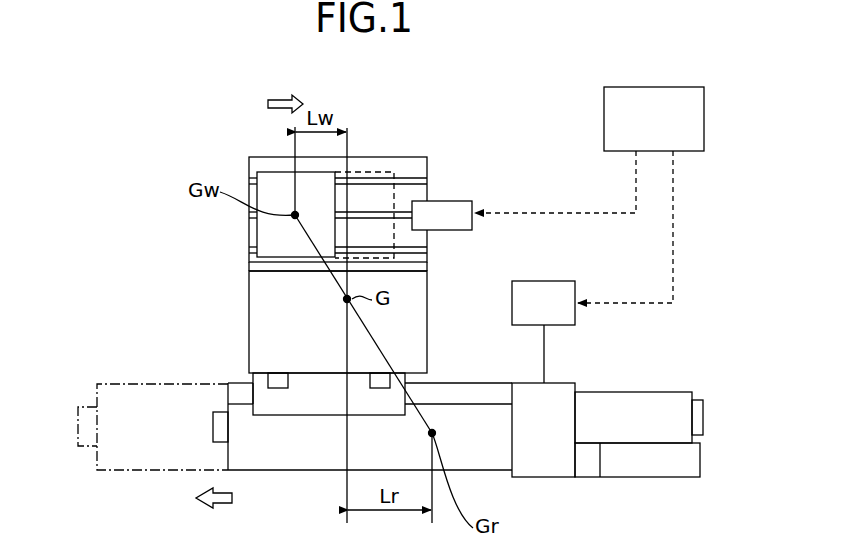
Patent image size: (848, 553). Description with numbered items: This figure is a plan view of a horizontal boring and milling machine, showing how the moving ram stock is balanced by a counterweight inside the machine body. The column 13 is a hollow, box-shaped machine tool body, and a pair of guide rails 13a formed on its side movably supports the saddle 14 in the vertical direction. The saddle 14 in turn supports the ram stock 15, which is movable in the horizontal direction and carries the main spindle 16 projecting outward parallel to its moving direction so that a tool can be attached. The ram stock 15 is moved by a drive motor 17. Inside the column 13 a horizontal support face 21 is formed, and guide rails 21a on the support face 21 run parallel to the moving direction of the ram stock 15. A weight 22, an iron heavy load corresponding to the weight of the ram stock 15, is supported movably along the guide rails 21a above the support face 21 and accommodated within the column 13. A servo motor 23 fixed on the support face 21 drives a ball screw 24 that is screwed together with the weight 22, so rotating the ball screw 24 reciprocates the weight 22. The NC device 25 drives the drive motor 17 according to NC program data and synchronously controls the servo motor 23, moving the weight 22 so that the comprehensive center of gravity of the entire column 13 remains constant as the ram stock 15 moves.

The column 13 is at (249, 313).
The guide rails 13a is at (392, 393).
The saddle 14 is at (310, 408).
The ram stock 15 is at (497, 463).
The main spindle 16 is at (214, 428).
The drive motor 17 is at (565, 318).
The support face 21 is at (414, 168).
The guide rails 21a is at (427, 182).
The weight 22 is at (262, 178).
The servo motor 23 is at (470, 203).
The ball screw 24 is at (368, 212).
The NC device 25 is at (677, 87).